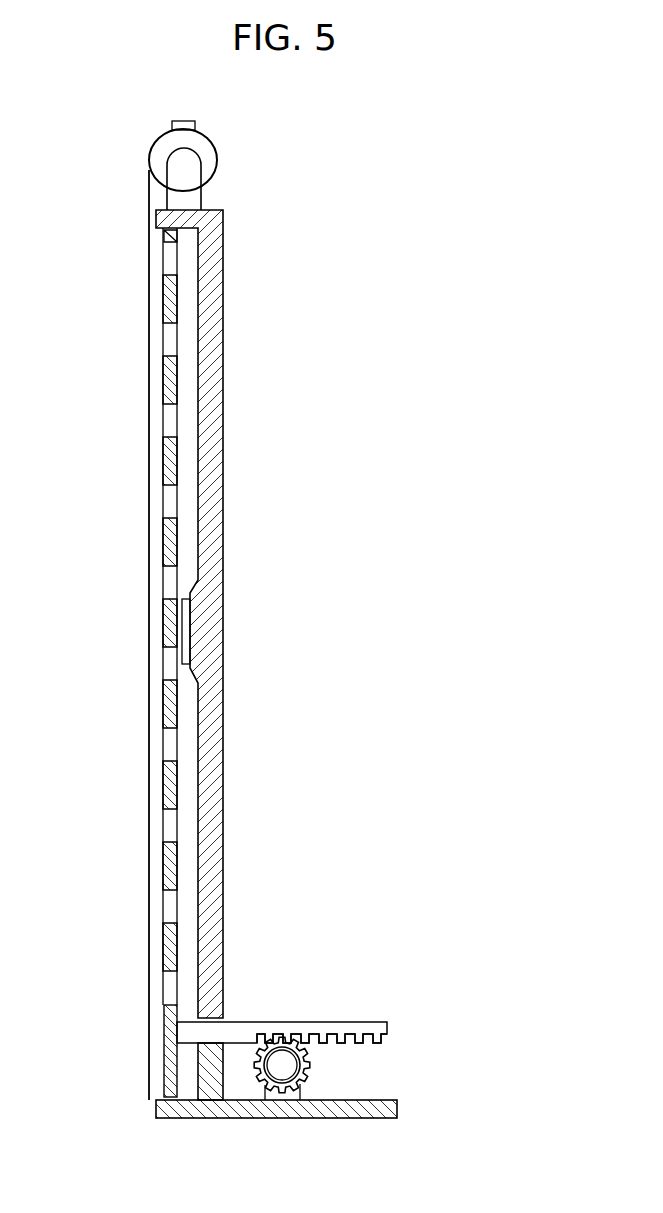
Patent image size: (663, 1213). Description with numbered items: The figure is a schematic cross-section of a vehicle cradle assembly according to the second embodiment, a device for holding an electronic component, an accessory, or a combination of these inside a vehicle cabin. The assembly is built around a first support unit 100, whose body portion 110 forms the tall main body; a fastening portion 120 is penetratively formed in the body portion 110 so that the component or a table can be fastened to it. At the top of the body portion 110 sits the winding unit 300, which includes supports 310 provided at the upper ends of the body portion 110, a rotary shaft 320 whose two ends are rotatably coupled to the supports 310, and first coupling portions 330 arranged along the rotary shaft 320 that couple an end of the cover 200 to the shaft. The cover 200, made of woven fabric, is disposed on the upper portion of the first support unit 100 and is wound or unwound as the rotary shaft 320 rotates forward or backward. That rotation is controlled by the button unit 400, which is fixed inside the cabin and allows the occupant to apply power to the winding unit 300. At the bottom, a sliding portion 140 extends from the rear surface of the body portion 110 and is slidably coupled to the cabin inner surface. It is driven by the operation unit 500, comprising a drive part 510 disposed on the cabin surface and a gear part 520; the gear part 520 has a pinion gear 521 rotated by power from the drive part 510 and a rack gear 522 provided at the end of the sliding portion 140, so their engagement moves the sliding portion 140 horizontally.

The first support unit 100 is at (271, 655).
The body portion 110 is at (177, 783).
The fastening portion 120 is at (172, 911).
The sliding portion 140 is at (282, 985).
The cover 200 is at (148, 253).
The winding unit 300 is at (284, 144).
The supports 310 is at (200, 173).
The rotary shaft 320 is at (217, 152).
The first coupling portions 330 is at (185, 120).
The button unit 400 is at (190, 630).
The operation unit 500 is at (351, 1097).
The drive part 510 is at (281, 1065).
The gear part 520 is at (374, 1062).
The pinion gear 521 is at (312, 1062).
The rack gear 522 is at (380, 1043).